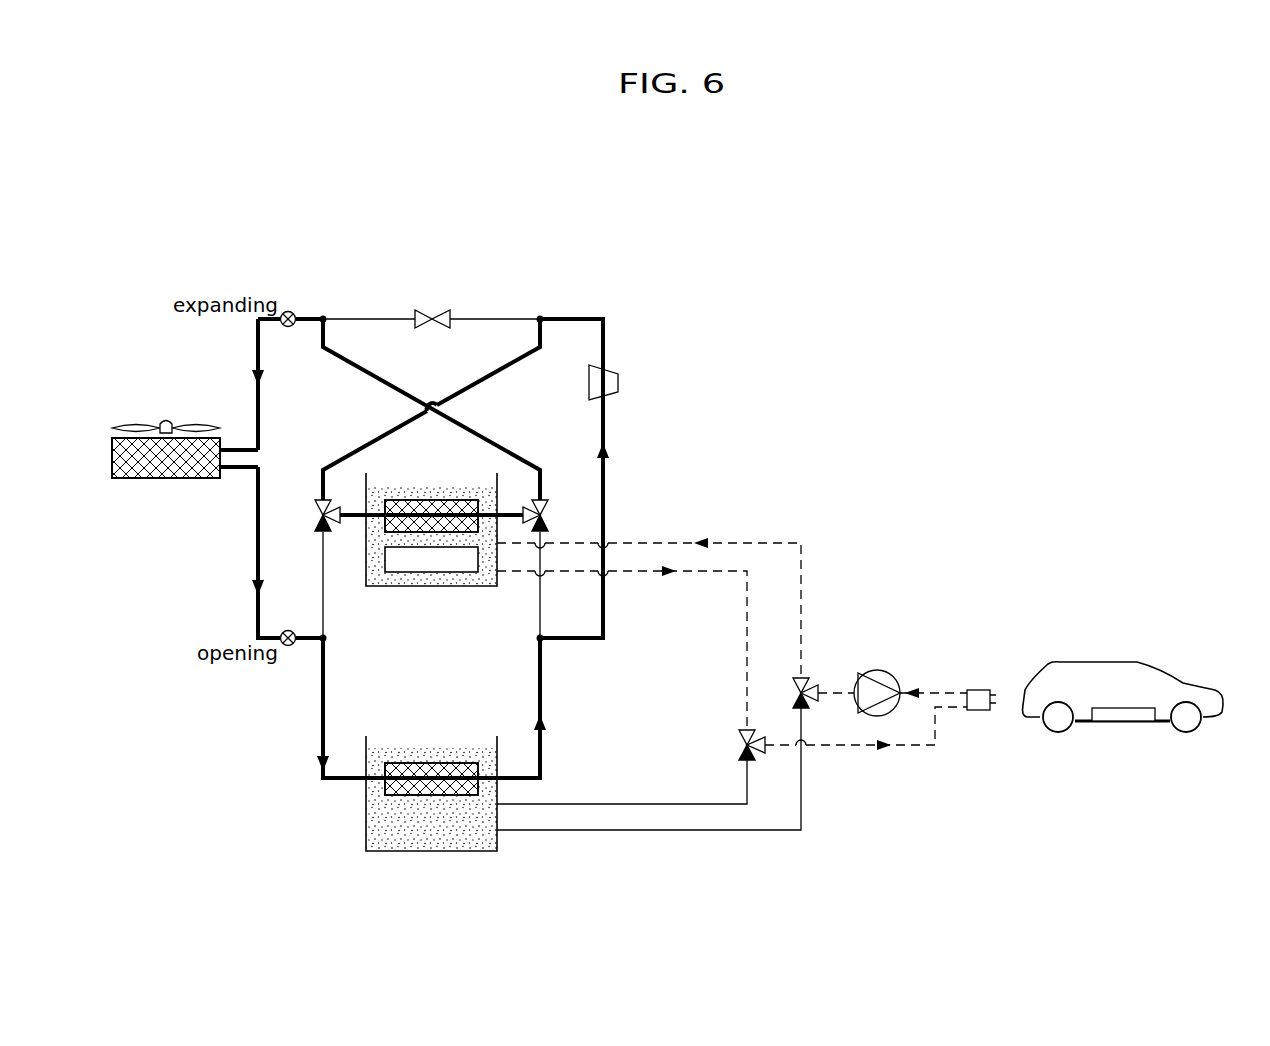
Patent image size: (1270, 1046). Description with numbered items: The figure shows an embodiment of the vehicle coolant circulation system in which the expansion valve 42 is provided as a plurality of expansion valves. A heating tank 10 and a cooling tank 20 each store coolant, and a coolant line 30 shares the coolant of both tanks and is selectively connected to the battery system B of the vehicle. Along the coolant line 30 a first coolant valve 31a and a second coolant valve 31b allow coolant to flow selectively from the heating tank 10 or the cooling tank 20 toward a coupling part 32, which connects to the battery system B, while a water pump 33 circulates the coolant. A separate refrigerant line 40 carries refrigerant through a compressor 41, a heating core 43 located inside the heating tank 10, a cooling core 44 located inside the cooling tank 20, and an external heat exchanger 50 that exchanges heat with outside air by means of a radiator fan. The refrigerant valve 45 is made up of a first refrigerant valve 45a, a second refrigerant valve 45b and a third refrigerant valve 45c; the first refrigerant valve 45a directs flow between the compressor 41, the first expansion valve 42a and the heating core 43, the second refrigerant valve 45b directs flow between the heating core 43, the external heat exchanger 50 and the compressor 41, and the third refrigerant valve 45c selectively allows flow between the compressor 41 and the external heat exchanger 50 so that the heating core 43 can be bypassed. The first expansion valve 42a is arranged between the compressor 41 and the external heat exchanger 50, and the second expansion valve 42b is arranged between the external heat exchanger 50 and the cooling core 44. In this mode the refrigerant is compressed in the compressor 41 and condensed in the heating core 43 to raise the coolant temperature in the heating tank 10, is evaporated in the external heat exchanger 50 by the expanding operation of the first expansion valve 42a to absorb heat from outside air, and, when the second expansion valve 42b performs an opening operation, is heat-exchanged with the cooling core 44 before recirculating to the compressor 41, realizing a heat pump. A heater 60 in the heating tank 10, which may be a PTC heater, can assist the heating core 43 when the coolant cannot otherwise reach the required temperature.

The heating tank 10 is at (402, 587).
The cooling tank 20 is at (366, 823).
The coolant line 30 is at (801, 590).
The first coolant valve 31a is at (807, 677).
The second coolant valve 31b is at (740, 748).
The coupling part 32 is at (978, 711).
The water pump 33 is at (888, 672).
The refrigerant line 40 is at (573, 318).
The compressor 41 is at (618, 366).
The expansion valve 42 is at (272, 481).
The first expansion valve 42a is at (288, 311).
The second expansion valve 42b is at (289, 646).
The heating core 43 is at (428, 500).
The cooling core 44 is at (447, 762).
The refrigerant valve 45 is at (436, 417).
The first refrigerant valve 45a is at (317, 527).
The second refrigerant valve 45b is at (547, 503).
The third refrigerant valve 45c is at (440, 310).
The external heat exchanger 50 is at (143, 479).
The heater 60 is at (462, 572).
The battery system B is at (1123, 721).